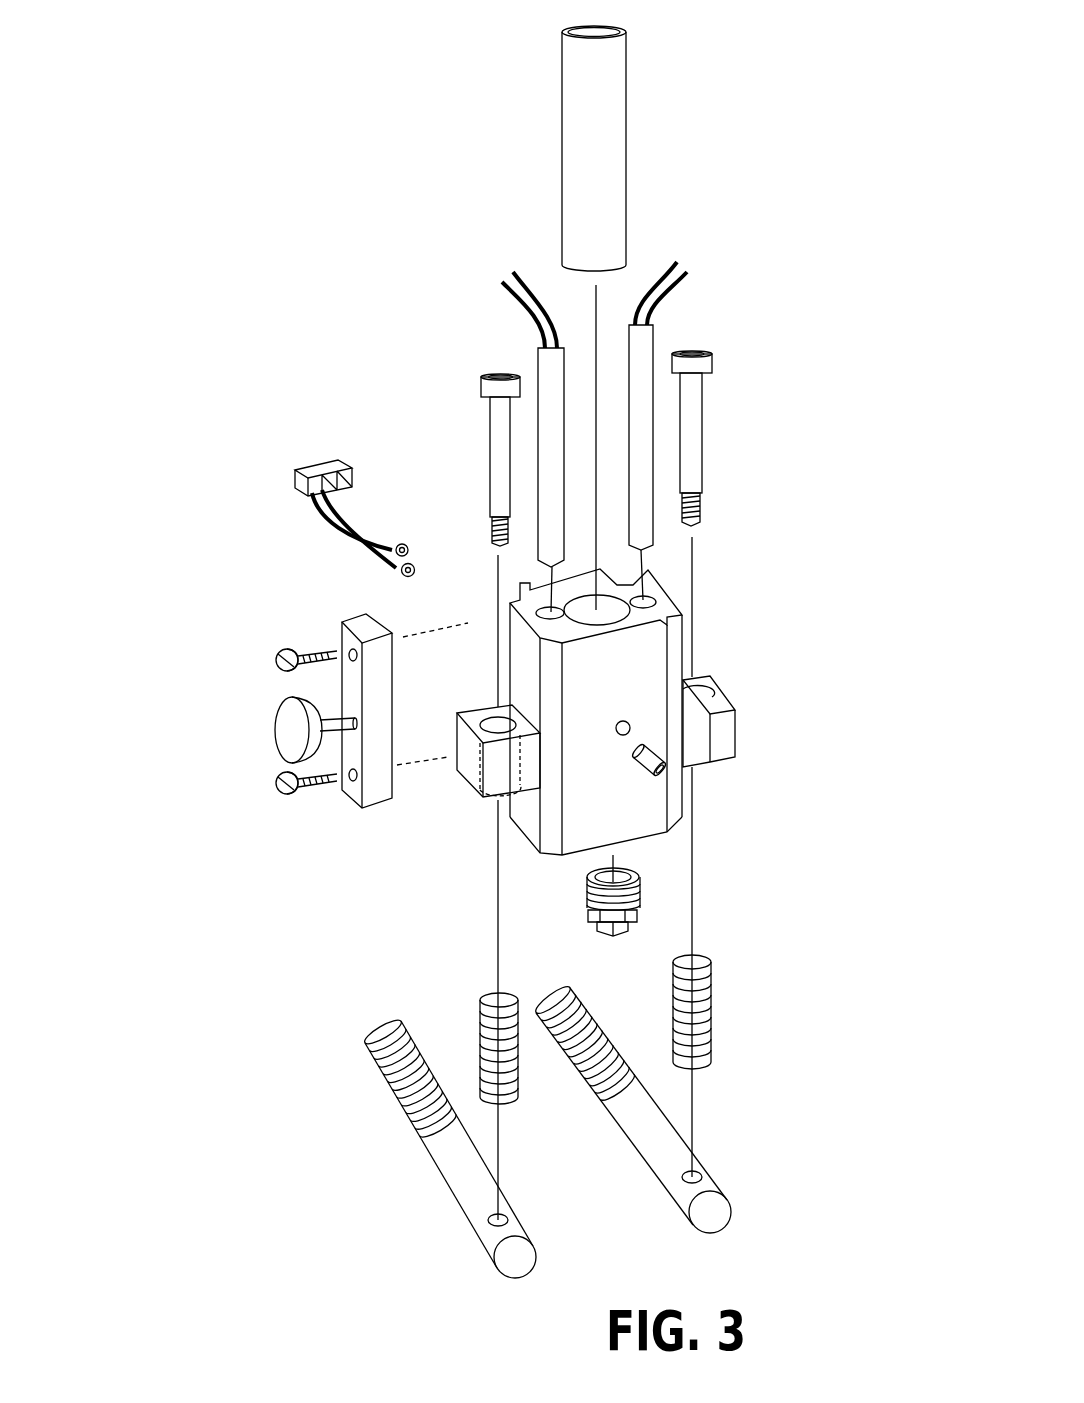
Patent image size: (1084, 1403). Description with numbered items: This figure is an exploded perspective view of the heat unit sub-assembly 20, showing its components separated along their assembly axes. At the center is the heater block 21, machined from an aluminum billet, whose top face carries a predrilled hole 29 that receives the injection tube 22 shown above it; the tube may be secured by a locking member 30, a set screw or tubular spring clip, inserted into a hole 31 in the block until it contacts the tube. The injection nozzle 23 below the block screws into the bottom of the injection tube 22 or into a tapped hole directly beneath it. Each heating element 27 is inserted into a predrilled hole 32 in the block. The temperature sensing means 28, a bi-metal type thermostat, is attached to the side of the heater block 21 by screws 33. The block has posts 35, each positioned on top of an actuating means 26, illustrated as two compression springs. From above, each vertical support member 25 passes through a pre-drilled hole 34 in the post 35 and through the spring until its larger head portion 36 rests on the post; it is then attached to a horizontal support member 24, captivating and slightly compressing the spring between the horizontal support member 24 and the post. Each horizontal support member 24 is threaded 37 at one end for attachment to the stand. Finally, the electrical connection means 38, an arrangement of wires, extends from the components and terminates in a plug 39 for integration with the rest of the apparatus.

The heat unit sub-assembly 20 is at (368, 214).
The heater block 21 is at (647, 707).
The injection tube 22 is at (555, 192).
The injection nozzle 23 is at (617, 937).
The horizontal support member 24 is at (468, 1192).
The vertical support member 25 is at (495, 438).
The actuating means 26 is at (478, 1017).
The heating element 27 is at (537, 365).
The temperature sensing means 28 is at (380, 773).
The predrilled hole 29 is at (610, 623).
The locking member 30 is at (647, 762).
The hole 31 is at (617, 733).
The predrilled hole 32 is at (543, 607).
The screws 33 is at (308, 652).
The pre-drilled hole 34 is at (497, 730).
The post 35 is at (467, 760).
The head portion 36 is at (478, 378).
The threaded end 37 is at (365, 1048).
The electrical connection means 38 is at (340, 530).
The plug 39 is at (313, 463).